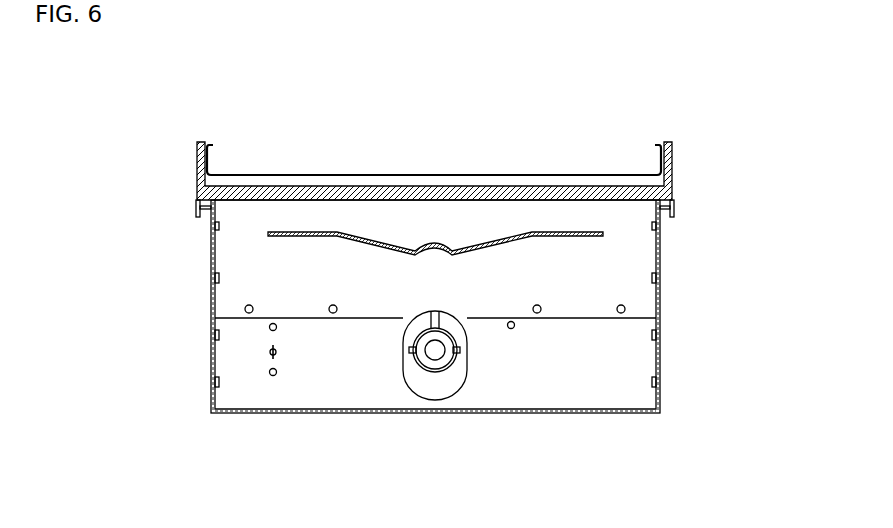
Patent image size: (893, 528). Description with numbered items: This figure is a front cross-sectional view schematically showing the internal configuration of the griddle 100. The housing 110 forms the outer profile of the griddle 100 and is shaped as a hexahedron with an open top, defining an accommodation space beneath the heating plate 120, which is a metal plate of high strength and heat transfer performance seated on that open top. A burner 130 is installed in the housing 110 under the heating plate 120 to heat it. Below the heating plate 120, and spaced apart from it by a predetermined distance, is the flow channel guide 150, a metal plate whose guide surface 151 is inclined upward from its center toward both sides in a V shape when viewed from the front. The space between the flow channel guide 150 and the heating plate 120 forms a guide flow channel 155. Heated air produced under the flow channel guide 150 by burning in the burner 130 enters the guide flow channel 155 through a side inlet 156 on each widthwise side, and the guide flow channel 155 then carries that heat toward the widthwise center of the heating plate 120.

The griddle 100 is at (710, 94).
The housing 110 is at (668, 368).
The heating plate 120 is at (329, 190).
The burner 130 is at (423, 375).
The flow channel guide 150 is at (496, 228).
The guide surface 151 is at (571, 234).
The guide flow channel 155 is at (461, 231).
The side inlet 156 is at (262, 213).